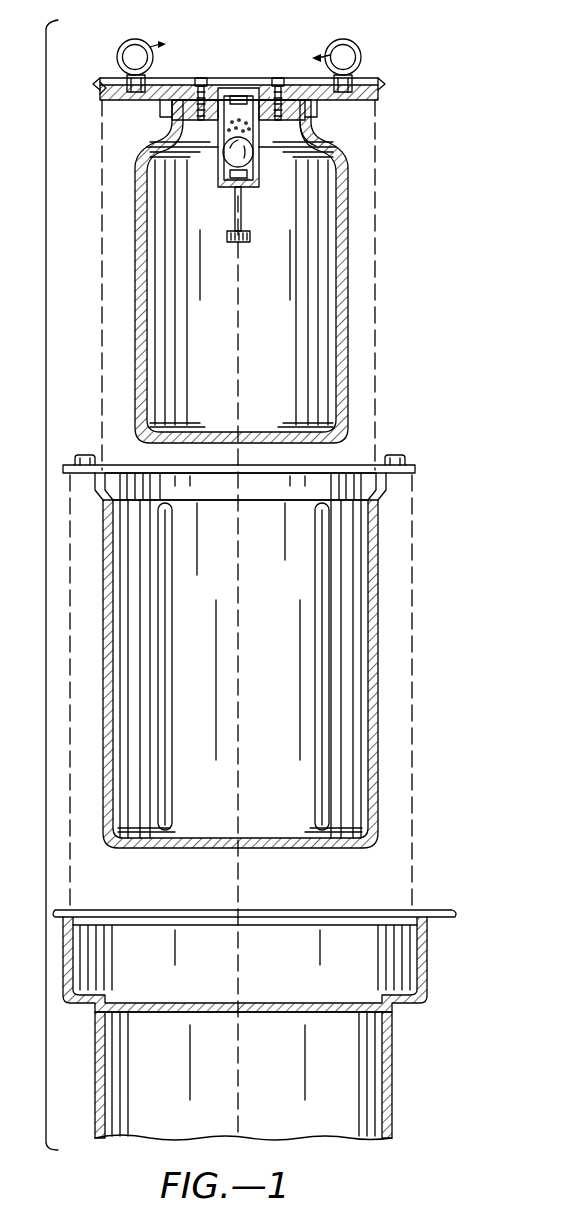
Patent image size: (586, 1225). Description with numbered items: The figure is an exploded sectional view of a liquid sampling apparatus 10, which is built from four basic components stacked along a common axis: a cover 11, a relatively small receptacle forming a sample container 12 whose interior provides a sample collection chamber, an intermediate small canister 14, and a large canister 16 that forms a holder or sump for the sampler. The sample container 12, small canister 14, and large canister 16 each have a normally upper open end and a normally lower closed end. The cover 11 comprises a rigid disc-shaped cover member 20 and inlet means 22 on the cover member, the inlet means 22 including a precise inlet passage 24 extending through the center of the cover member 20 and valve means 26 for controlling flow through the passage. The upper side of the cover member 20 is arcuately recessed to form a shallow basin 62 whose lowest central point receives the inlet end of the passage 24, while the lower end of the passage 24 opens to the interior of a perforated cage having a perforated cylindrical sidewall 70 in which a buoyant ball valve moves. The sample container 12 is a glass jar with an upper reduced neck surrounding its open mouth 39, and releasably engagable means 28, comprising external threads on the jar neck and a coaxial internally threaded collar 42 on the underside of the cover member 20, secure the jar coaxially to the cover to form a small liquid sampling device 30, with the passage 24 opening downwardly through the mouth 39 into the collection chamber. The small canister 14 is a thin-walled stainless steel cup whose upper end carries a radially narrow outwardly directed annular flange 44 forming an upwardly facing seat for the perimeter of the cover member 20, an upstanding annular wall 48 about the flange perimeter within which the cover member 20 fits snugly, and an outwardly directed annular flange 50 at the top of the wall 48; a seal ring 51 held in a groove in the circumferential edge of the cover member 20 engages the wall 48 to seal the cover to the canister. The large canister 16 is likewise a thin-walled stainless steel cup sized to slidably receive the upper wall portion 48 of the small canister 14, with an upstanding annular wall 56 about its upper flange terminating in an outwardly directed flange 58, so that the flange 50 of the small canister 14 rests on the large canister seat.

The liquid sampling apparatus 10 is at (46, 498).
The cover 11 is at (382, 89).
The sample container 12 is at (362, 231).
The small canister 14 is at (393, 651).
The large canister 16 is at (410, 1067).
The cover member 20 is at (370, 80).
The inlet means 22 is at (212, 82).
The inlet passage 24 is at (250, 88).
The valve means 26 is at (210, 160).
The releasably engagable means 28 is at (150, 104).
The sampling device 30 is at (364, 307).
The open mouth 39 is at (300, 130).
The internally threaded collar 42 is at (300, 110).
The annular flange 44 is at (364, 476).
The upstanding annular wall 48 is at (380, 484).
The outwardly directed annular flange 50 is at (408, 468).
The seal ring 51 is at (100, 86).
The upstanding annular wall 56 is at (424, 952).
The outwardly directed flange 58 is at (440, 910).
The shallow basin 62 is at (168, 80).
The perforated cylindrical sidewall 70 is at (262, 158).